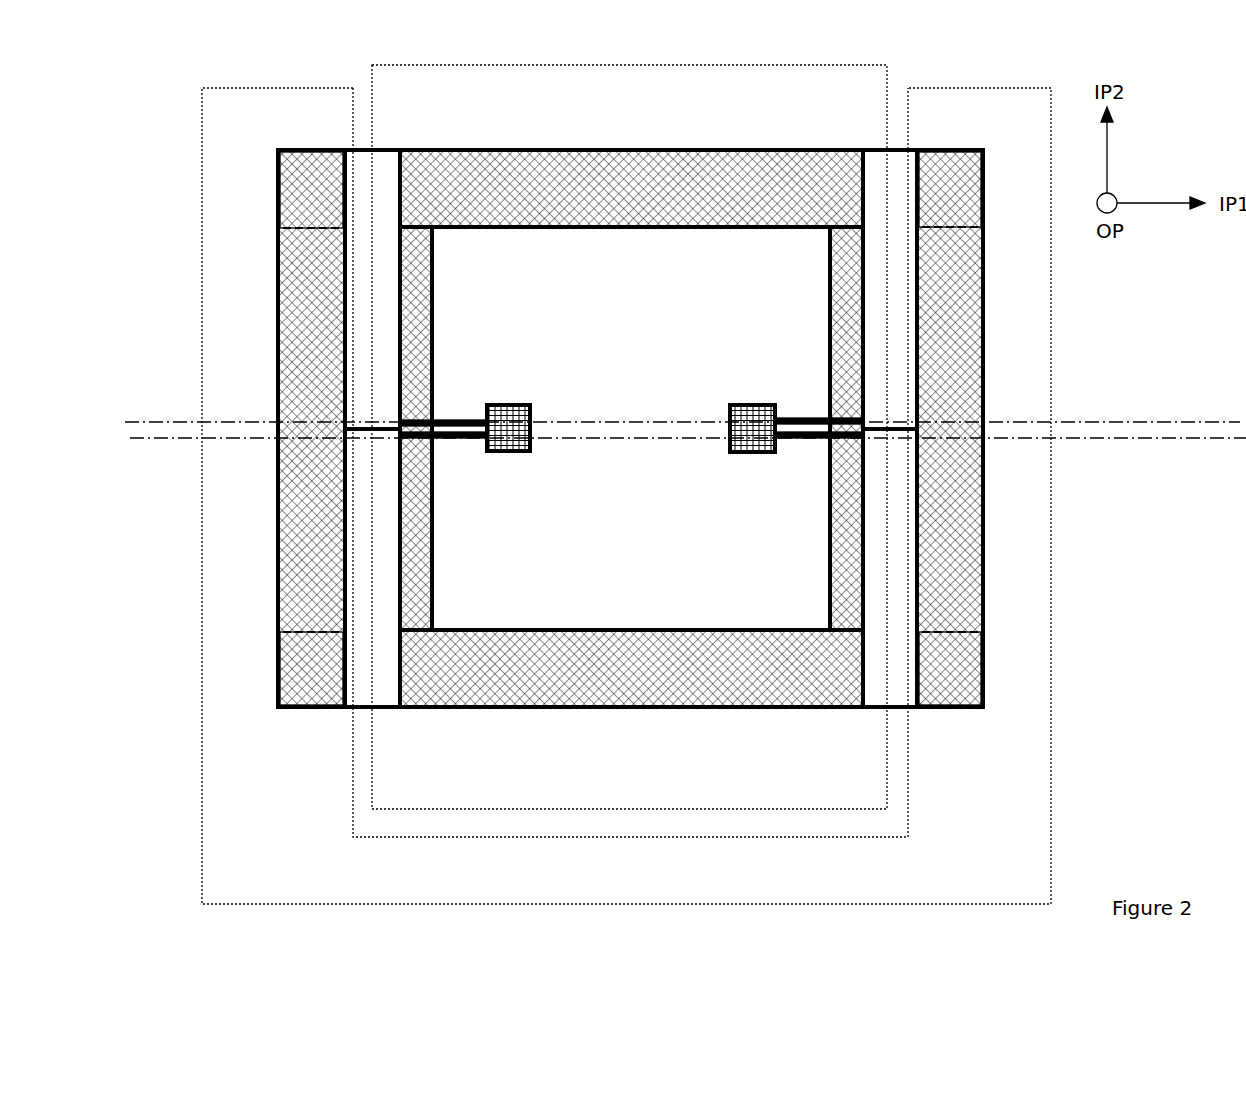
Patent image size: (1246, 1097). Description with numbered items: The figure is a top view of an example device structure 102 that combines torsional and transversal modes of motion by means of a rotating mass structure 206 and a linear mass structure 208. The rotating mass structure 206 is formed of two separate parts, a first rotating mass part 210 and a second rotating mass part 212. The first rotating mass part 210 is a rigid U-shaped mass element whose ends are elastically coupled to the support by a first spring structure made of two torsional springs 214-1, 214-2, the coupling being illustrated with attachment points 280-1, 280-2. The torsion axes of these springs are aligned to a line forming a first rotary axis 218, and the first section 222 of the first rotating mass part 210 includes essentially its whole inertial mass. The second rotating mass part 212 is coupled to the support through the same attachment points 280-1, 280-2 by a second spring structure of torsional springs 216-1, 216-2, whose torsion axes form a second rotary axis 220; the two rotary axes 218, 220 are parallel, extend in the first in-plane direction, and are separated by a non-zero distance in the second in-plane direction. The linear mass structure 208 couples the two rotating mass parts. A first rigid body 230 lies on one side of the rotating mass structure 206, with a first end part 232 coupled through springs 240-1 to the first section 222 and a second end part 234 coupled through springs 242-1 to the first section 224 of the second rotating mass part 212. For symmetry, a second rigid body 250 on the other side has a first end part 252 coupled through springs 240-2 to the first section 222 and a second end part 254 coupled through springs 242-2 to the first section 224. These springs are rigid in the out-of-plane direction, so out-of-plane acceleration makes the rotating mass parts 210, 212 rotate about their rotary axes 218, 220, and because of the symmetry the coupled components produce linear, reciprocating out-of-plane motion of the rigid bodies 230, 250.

The device structure 102 is at (1148, 481).
The rotating mass structure 206 is at (887, 88).
The linear mass structure 208 is at (1050, 660).
The first rotating mass part 210 is at (700, 150).
The second rotating mass part 212 is at (631, 463).
The spring of first spring structure 214-1 is at (798, 418).
The spring of first spring structure 214-2 is at (440, 420).
The spring of second spring structure 216-1 is at (815, 440).
The spring of second spring structure 216-2 is at (468, 440).
The first rotary axis 218 is at (1107, 420).
The second rotary axis 220 is at (1243, 440).
The first section of first rotating mass part 222 is at (592, 200).
The first section of second rotating mass part 224 is at (710, 632).
The first rigid body 230 is at (958, 330).
The first end part 232 is at (938, 170).
The second end part 234 is at (950, 690).
The springs 240-1 is at (890, 150).
The springs 240-2 is at (380, 150).
The springs 242-1 is at (862, 705).
The springs 242-2 is at (388, 705).
The second rigid body 250 is at (300, 540).
The first end part 252 is at (300, 165).
The second end part 254 is at (295, 690).
The attachment point 280-1 is at (740, 405).
The attachment point 280-2 is at (522, 405).